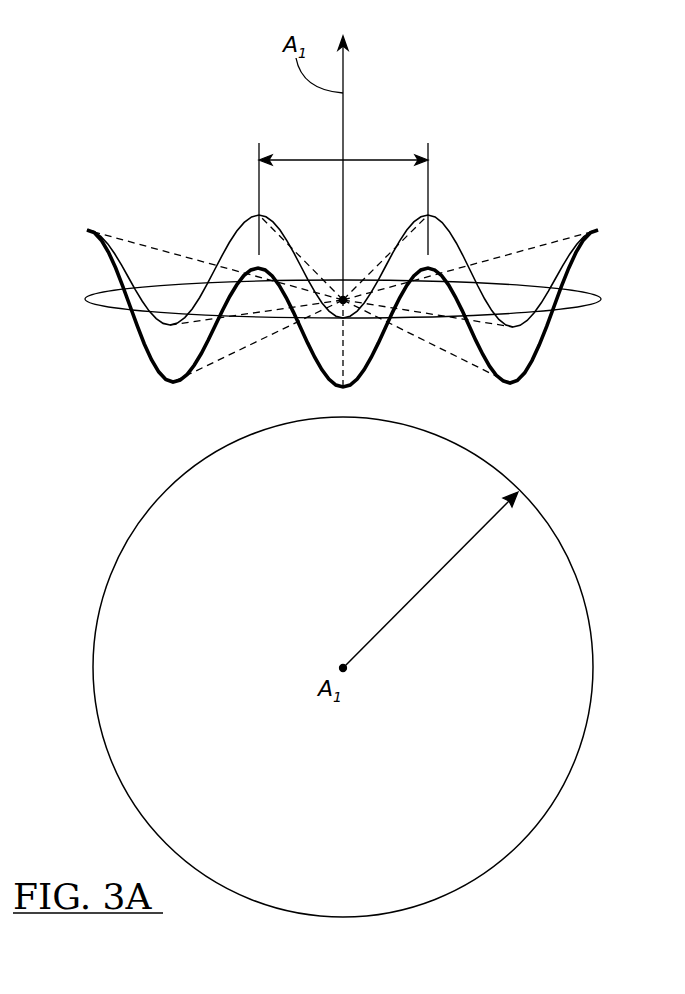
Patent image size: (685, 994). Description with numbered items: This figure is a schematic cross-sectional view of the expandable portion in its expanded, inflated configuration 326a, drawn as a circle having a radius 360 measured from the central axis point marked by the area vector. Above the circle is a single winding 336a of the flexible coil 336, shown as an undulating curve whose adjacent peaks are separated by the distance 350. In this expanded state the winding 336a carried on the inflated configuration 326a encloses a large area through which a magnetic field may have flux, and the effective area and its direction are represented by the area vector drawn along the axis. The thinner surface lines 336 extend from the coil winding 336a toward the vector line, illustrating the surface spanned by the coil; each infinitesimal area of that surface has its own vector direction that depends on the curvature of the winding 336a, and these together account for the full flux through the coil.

The distance between peaks 350 is at (316, 183).
The flexible coil 336 is at (343, 300).
The single winding of the flexible coil 336a is at (517, 383).
The inflated expandable member configuration 326a is at (136, 521).
The radius 360 is at (487, 532).